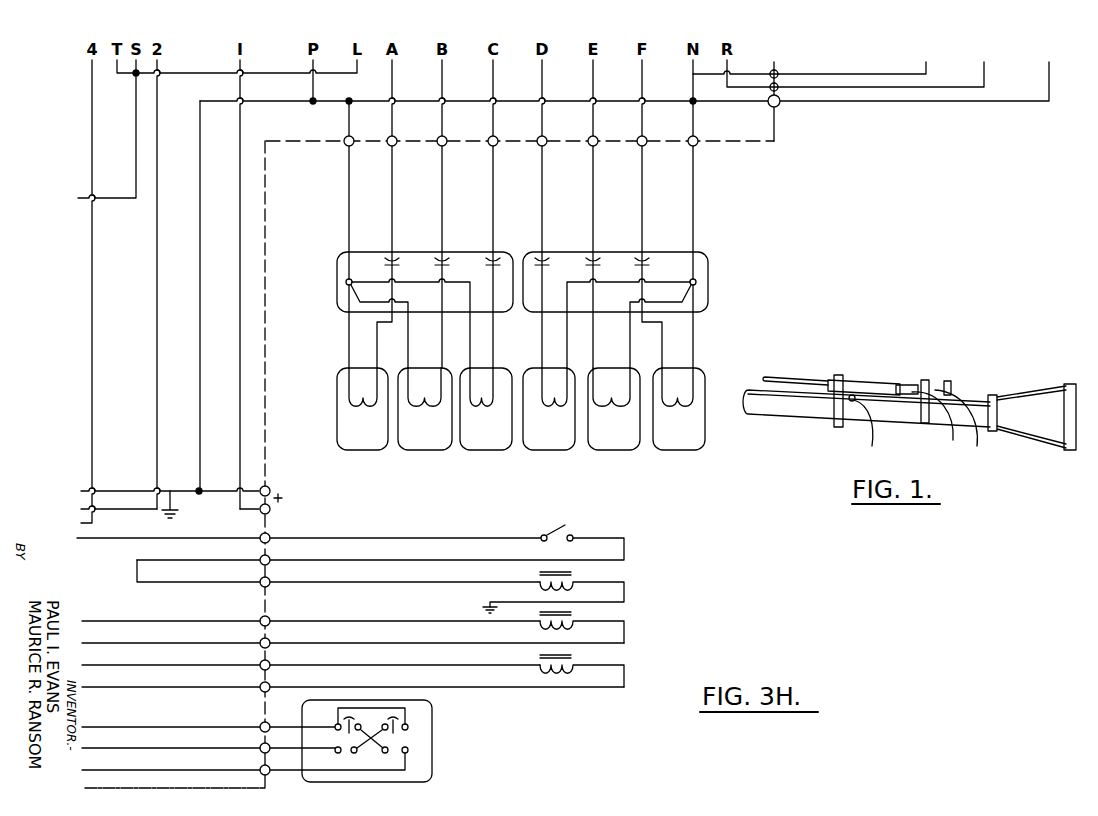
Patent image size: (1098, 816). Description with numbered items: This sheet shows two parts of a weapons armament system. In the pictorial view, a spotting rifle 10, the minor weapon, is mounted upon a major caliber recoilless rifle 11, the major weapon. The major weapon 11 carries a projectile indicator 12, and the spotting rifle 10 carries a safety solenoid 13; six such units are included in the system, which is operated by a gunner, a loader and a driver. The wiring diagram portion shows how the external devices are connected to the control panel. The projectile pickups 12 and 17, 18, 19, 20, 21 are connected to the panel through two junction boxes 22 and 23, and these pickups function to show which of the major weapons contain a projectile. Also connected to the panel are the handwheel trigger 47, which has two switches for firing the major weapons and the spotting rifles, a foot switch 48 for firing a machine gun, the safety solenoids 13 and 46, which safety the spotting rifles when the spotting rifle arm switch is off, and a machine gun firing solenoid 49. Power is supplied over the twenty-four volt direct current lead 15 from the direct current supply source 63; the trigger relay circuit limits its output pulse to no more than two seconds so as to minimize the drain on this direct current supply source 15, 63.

In FIG. 1, the spotting rifle 10 is at (853, 382).
In FIG. 1, the major caliber recoilless rifle 11 is at (977, 408).
In FIG. 3H, the projectile indicator 12 is at (375, 452).
In FIG. 1, the projectile indicator 12 is at (851, 402).
In FIG. 3H, the safety solenoid 13 is at (574, 612).
In FIG. 1, the safety solenoid 13 is at (903, 390).
In FIG. 3H, the 24 volt direct current lead 15 is at (270, 511).
In FIG. 3H, the projectile pickup 17 is at (440, 452).
In FIG. 3H, the projectile pickup 18 is at (493, 452).
In FIG. 3H, the projectile pickup 19 is at (555, 452).
In FIG. 3H, the projectile pickup 20 is at (612, 452).
In FIG. 3H, the projectile pickup 21 is at (683, 452).
In FIG. 3H, the junction box 22 is at (337, 278).
In FIG. 3H, the junction box 23 is at (708, 287).
In FIG. 3H, the safety solenoid 46 is at (574, 655).
In FIG. 3H, the handwheel trigger 47 is at (432, 745).
In FIG. 3H, the foot switch 48 is at (558, 531).
In FIG. 3H, the machine gun firing solenoid 49 is at (574, 572).
In FIG. 3H, the direct current supply source 63 is at (972, 103).